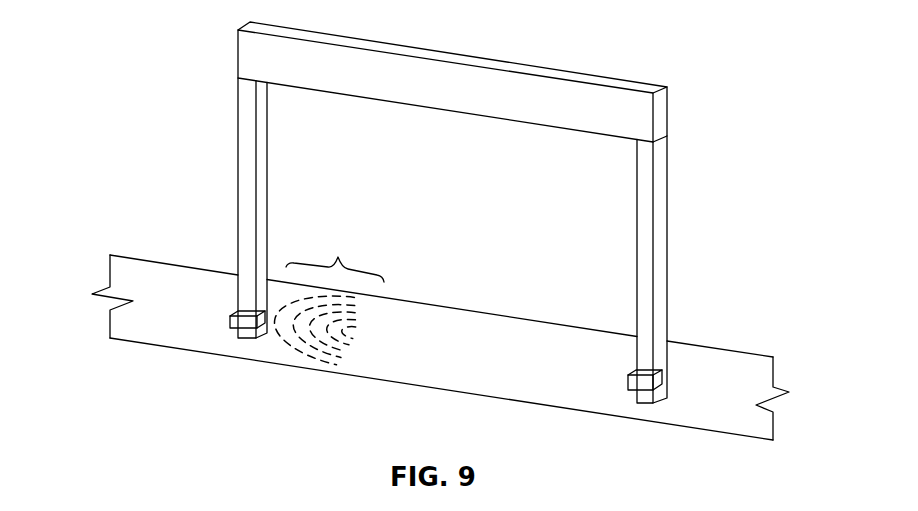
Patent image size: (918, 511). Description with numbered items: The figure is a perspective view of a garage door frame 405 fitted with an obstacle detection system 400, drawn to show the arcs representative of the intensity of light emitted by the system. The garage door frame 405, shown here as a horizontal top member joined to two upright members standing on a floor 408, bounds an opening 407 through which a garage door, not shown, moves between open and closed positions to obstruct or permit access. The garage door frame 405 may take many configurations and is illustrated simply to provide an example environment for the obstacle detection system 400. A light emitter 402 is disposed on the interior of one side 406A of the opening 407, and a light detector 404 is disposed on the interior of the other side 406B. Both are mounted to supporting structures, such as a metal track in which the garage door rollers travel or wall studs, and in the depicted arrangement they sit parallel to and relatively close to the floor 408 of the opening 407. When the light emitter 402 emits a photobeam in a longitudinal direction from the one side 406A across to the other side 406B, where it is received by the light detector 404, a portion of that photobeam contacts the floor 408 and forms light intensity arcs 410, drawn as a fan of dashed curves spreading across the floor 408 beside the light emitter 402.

The obstacle detection system 400 is at (160, 233).
The light emitter 402 is at (231, 318).
The light detector 404 is at (653, 383).
The garage door frame 405 is at (552, 92).
The one side of the opening 406A is at (248, 175).
The other side of the opening 406B is at (647, 258).
The opening 407 is at (287, 112).
The floor 408 is at (225, 361).
The light intensity arcs 410 is at (338, 258).